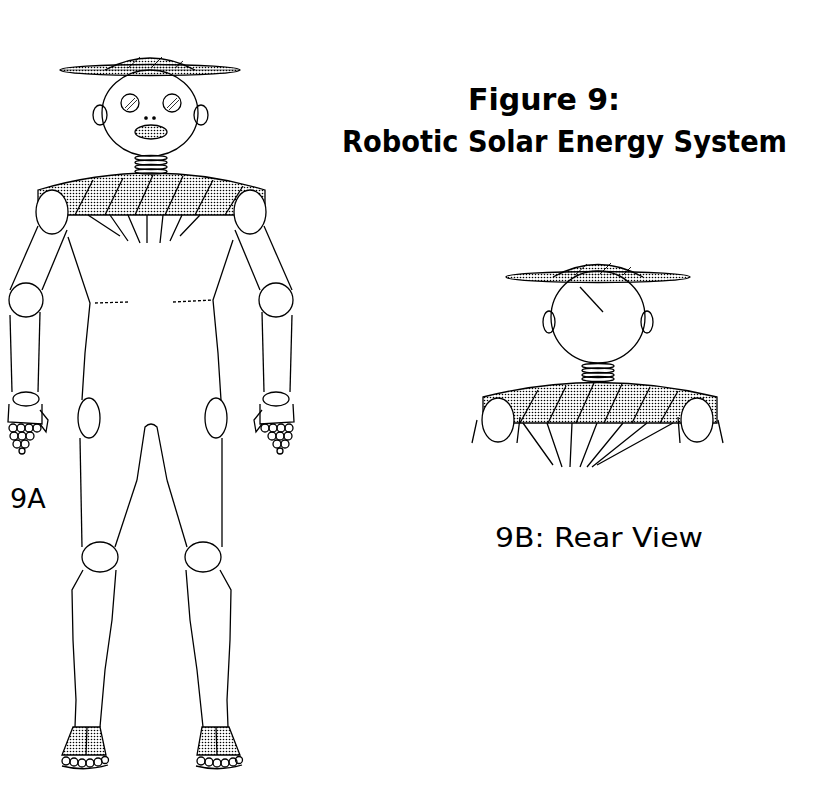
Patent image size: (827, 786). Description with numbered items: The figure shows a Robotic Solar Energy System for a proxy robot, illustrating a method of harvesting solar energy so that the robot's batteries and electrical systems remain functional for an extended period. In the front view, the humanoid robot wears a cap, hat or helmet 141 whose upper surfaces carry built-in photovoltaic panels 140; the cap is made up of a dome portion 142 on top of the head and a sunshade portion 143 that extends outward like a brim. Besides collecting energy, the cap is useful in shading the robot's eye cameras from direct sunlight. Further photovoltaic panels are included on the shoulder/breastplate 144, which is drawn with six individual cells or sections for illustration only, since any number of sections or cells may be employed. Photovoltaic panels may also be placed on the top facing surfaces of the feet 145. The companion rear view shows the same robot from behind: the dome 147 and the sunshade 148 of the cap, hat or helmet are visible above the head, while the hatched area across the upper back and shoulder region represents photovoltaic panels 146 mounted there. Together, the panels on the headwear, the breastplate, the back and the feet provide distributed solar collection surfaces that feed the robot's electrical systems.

In FIG. 9A, the photovoltaic panels 140 is at (62, 76).
In FIG. 9A, the cap, hat or helmet 141 is at (242, 70).
In FIG. 9A, the dome portion 142 is at (157, 57).
In FIG. 9A, the sunshade portion 143 is at (210, 63).
In FIG. 9A, the shoulder/breastplate 144 is at (144, 242).
In FIG. 9A, the feet 145 is at (200, 745).
In FIG. 9B, the photovoltaic panels on the upper back and shoulder area 146 is at (597, 440).
In FIG. 9B, the dome 147 is at (603, 312).
In FIG. 9B, the sunshade 148 is at (690, 275).